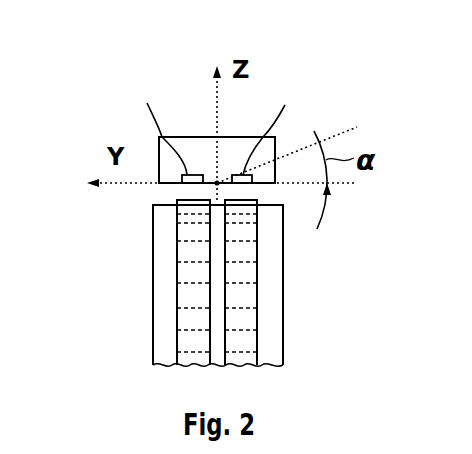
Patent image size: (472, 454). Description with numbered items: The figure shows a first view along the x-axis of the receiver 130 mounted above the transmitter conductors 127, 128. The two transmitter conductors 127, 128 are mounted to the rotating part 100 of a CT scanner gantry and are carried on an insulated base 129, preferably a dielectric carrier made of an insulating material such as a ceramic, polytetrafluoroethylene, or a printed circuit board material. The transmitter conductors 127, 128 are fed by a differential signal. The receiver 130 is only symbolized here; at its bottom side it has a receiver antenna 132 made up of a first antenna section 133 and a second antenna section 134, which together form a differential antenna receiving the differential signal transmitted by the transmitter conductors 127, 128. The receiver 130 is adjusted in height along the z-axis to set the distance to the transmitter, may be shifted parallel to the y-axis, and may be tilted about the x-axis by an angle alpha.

The rotating part 100 is at (217, 283).
The first transmitter conductor 127 is at (188, 294).
The second transmitter conductor 128 is at (245, 297).
The insulated base 129 is at (162, 253).
The receiver 130 is at (222, 97).
The receiver antenna 132 is at (237, 158).
The first antenna section 133 is at (165, 129).
The second antenna section 134 is at (318, 140).